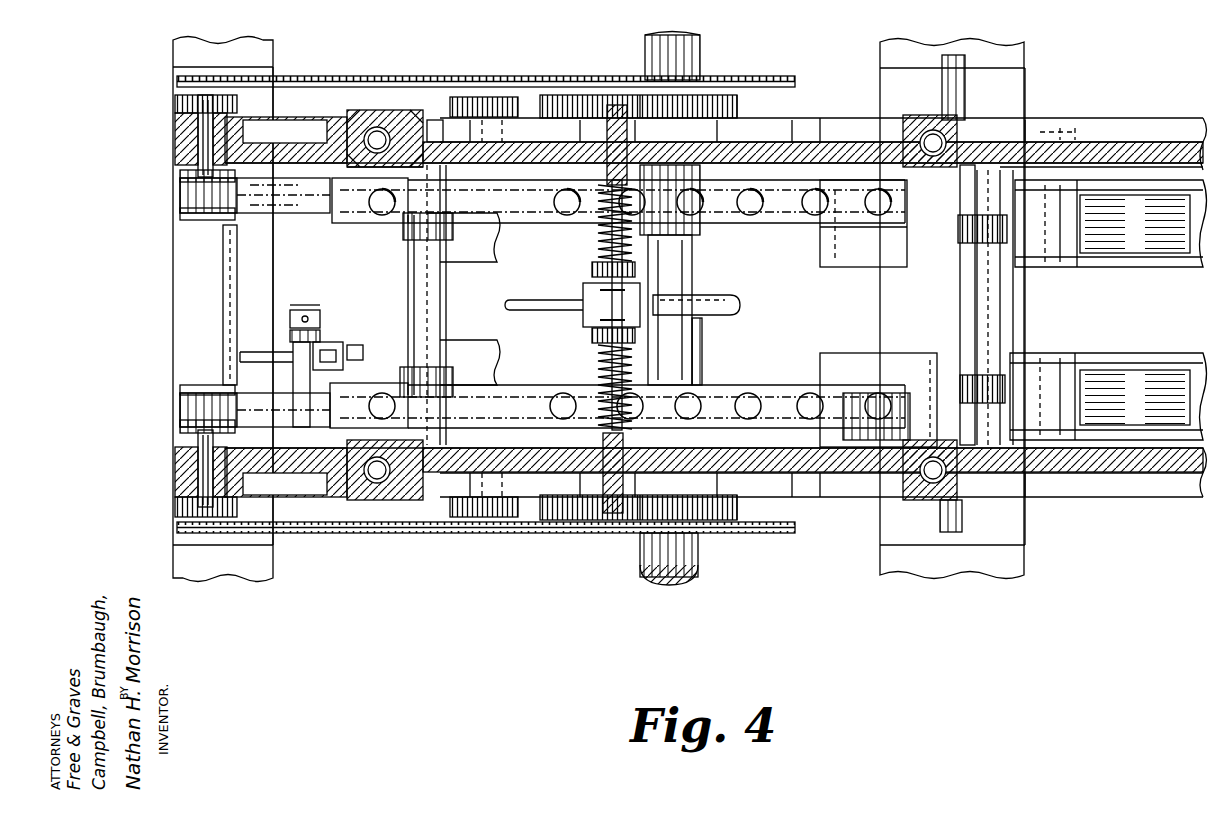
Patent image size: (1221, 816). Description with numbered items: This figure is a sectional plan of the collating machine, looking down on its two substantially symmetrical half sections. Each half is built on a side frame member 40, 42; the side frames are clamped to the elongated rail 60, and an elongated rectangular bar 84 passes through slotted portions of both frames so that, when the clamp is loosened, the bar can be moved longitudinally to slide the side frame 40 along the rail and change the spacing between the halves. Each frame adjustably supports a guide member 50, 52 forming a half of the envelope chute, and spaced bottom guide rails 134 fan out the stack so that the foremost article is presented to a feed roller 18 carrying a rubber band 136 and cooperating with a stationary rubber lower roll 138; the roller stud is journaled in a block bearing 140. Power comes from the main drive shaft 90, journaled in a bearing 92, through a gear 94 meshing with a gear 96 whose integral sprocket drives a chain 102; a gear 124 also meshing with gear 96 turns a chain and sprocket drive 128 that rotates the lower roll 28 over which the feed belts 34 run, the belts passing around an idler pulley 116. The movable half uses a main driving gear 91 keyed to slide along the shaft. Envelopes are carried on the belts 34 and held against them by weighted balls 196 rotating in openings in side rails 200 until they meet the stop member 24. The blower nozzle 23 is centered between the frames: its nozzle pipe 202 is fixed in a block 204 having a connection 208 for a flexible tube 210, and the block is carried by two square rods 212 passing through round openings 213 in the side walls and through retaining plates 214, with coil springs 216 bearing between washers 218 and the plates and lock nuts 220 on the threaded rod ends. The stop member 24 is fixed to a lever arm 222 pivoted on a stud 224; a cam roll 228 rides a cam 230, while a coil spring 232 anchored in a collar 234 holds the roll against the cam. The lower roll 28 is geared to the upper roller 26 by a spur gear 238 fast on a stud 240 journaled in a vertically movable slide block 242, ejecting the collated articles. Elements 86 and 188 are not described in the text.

The feed roller 18 is at (1178, 145).
The air or blower nozzle 23 is at (490, 303).
The stop member 24 is at (237, 297).
The upper roller 26 is at (178, 174).
The lower roll 28 is at (178, 213).
The feed belt 34 is at (178, 195).
The side frame member 40 is at (790, 140).
The side frame member 42 is at (815, 475).
The guide member 50 is at (1100, 267).
The guide member 52 is at (1170, 355).
The elongated rail 60 is at (1027, 62).
The elongated rectangular bar 84 is at (967, 95).
The left frame wall 86 is at (175, 57).
The main drive shaft 90 is at (640, 568).
The main driving gear 91 is at (737, 103).
The bearing 92 is at (722, 342).
The gear 94 is at (737, 506).
The gear 96 is at (548, 93).
The chain 102 is at (705, 75).
The idler pulley 116 is at (855, 233).
The gear 124 is at (470, 95).
The chain and sprocket drive 128 is at (290, 76).
The bottom guide rail 134 is at (418, 260).
The rubber band 136 is at (955, 228).
The lower roll 138 is at (405, 235).
The block bearing 140 is at (365, 112).
The coupling 188 is at (400, 380).
The weighted ball 196 is at (382, 216).
The side rail 200 is at (340, 220).
The nozzle pipe 202 is at (520, 310).
The block 204 is at (583, 296).
The connection 208 is at (640, 292).
The flexible tube 210 is at (740, 302).
The square rod 212 is at (598, 242).
The round opening 213 is at (592, 128).
The retaining plate 214 is at (627, 120).
The coil spring 216 is at (598, 218).
The washer 218 is at (592, 272).
The lock nut 220 is at (633, 280).
The lever arm 222 is at (253, 356).
The stud 224 is at (300, 310).
The cam roll 228 is at (325, 340).
The cam 230 is at (358, 345).
The coil spring 232 is at (290, 336).
The collar 234 is at (290, 316).
The spur gear 238 is at (173, 104).
The stud 240 is at (200, 140).
The slide block 242 is at (173, 128).